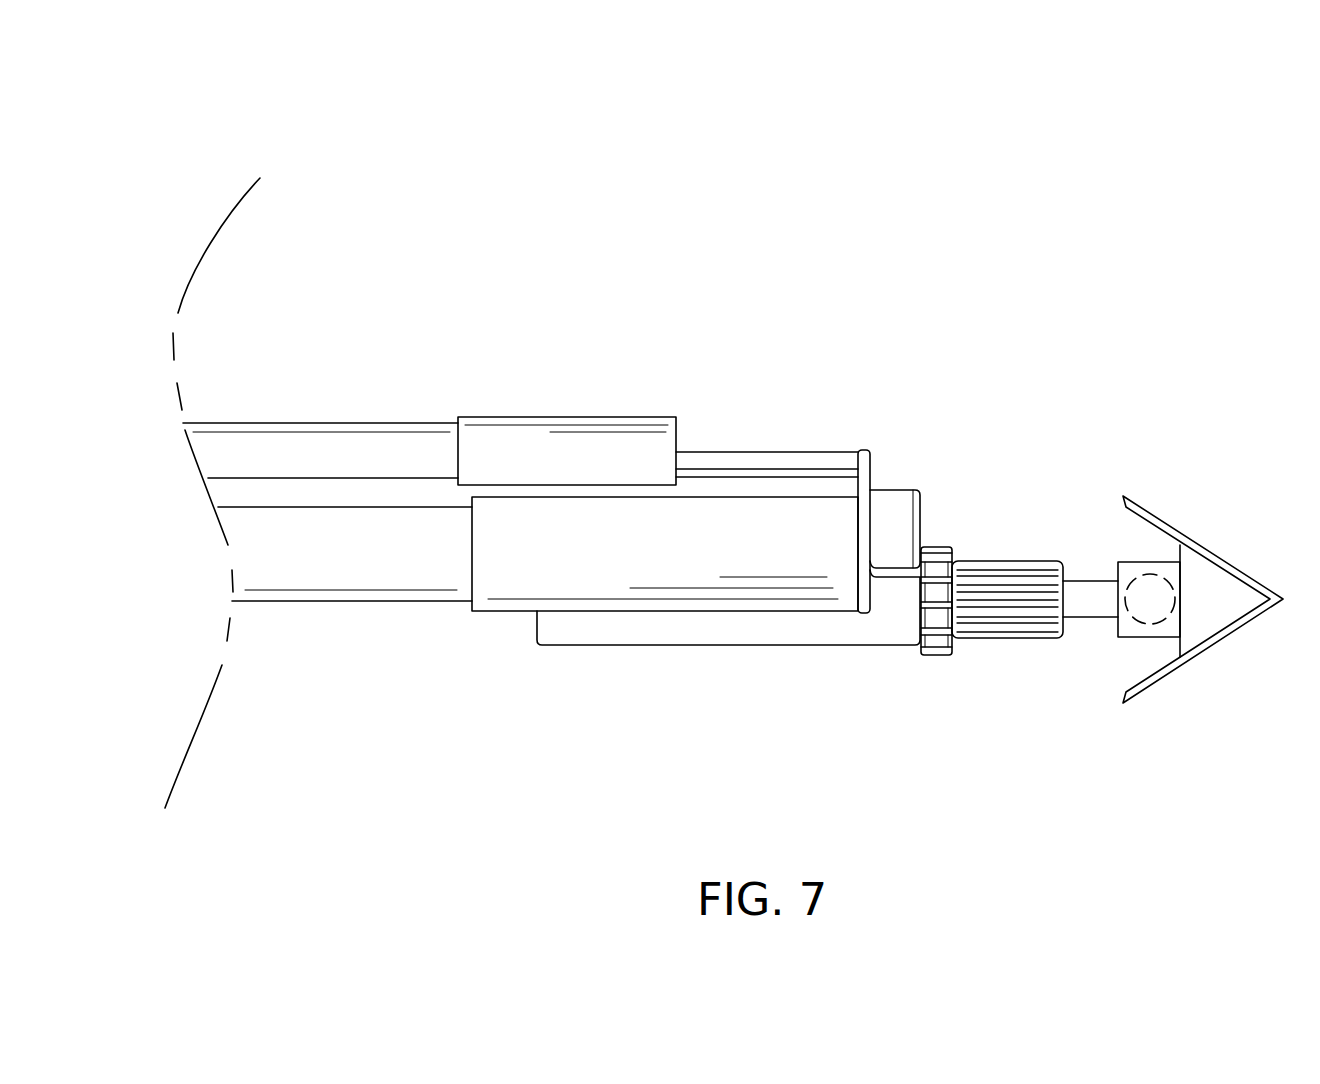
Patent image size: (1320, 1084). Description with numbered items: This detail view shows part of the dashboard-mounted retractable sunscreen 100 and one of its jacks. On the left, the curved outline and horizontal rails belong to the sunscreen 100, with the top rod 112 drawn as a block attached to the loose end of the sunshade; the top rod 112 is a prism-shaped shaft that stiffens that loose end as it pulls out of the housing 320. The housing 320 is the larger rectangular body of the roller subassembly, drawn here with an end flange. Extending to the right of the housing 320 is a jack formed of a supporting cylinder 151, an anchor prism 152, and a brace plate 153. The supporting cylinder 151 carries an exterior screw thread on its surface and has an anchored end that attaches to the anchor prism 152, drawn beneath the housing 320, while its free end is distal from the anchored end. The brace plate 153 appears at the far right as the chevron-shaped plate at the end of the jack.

The dashboard-mounted retractable sunscreen 100 is at (192, 182).
The top rod 112 is at (558, 440).
The housing 320 is at (744, 520).
The supporting cylinder 151 is at (997, 582).
The anchor prism 152 is at (875, 637).
The brace plate 153 is at (1215, 555).